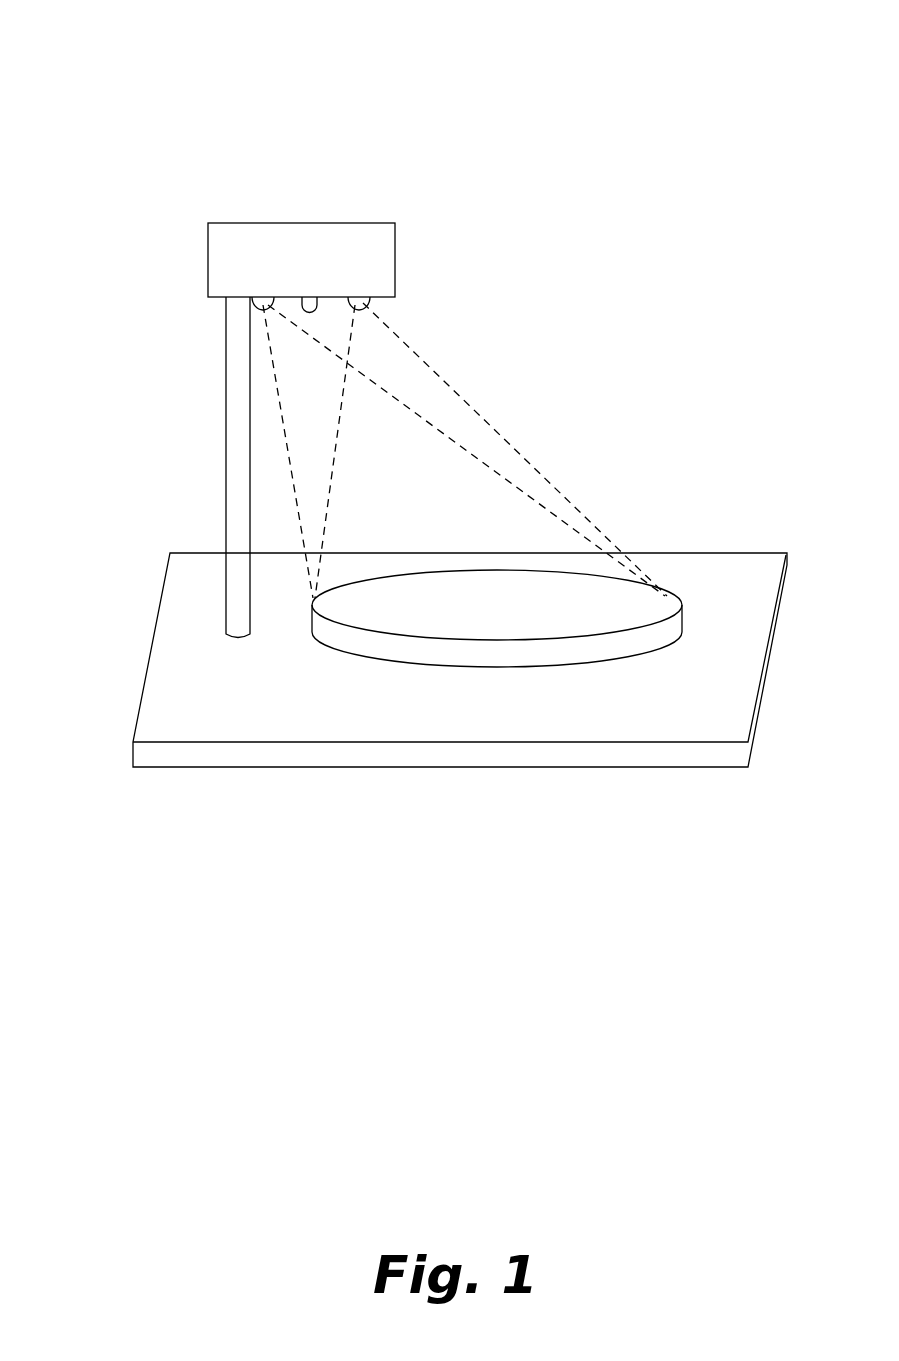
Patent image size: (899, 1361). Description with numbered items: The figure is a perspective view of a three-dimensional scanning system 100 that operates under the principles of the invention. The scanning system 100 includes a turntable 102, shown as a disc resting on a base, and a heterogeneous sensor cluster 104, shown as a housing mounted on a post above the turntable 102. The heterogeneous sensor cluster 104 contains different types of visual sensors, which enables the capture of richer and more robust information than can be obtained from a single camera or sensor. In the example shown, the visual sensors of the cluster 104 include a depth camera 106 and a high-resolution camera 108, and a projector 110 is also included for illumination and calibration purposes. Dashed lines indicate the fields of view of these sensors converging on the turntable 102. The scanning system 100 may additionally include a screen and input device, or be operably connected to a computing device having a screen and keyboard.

The 3D scanning system 100 is at (147, 61).
The turntable 102 is at (618, 605).
The heterogeneous sensor cluster 104 is at (373, 248).
The depth camera 106 is at (363, 300).
The high-resolution camera 108 is at (252, 310).
The projector 110 is at (310, 306).